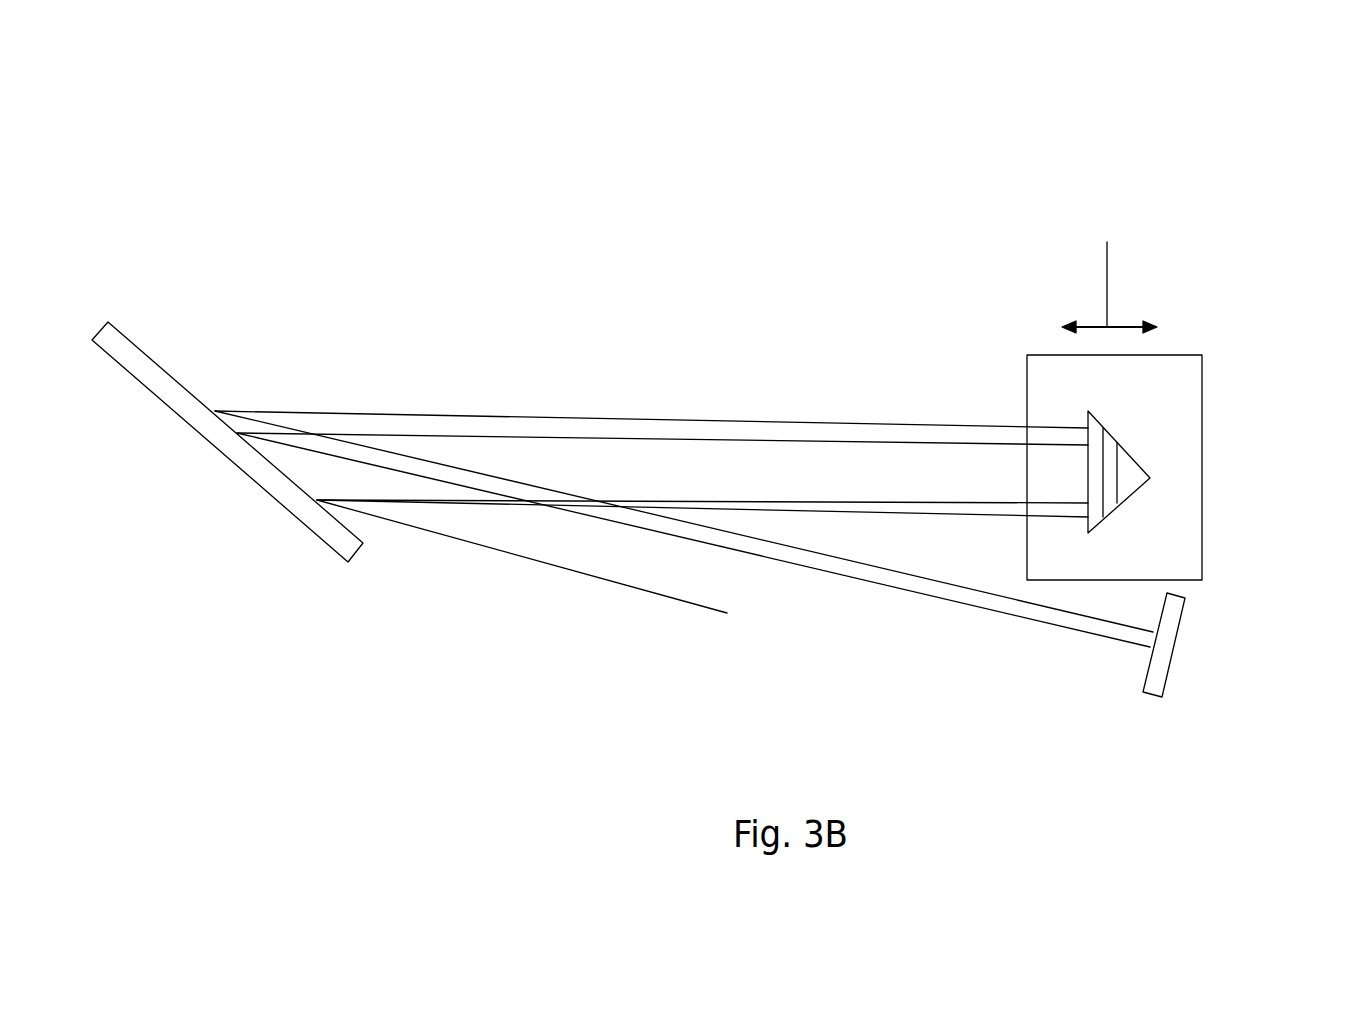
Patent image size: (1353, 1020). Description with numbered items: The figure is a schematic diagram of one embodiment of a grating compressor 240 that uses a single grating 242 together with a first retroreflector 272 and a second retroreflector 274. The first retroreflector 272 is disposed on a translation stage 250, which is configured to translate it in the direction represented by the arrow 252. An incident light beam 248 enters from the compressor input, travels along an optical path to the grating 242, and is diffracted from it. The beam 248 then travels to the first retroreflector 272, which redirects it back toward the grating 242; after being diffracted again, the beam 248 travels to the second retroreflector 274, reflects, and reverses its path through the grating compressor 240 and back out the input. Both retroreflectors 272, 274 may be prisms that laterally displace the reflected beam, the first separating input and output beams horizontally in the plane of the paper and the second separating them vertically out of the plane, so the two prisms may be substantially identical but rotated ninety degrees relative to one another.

The grating compressor 240 is at (258, 158).
The grating 242 is at (245, 480).
The incident light beam 248 is at (587, 575).
The translation stage 250 is at (1202, 359).
The arrow 252 is at (1109, 271).
The first retroreflector 272 is at (1138, 492).
The second retroreflector 274 is at (1182, 630).